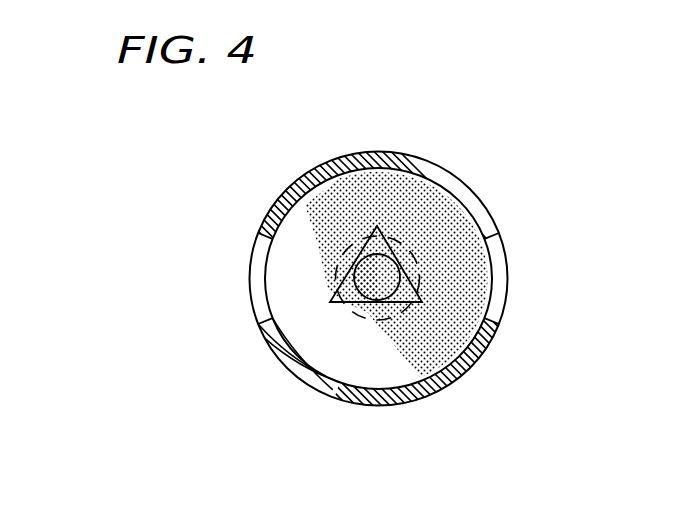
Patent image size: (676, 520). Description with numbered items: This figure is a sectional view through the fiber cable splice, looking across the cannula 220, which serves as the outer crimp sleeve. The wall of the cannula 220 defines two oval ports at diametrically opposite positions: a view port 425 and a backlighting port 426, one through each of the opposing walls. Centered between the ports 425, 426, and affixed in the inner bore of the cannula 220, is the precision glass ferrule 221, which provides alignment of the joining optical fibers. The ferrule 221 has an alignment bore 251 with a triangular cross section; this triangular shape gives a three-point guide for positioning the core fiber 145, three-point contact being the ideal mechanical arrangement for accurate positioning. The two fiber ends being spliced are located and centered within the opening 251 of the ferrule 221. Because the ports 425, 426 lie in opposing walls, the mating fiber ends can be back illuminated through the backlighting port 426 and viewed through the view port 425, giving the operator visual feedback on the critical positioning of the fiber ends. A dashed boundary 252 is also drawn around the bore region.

The cannula 220 is at (303, 180).
The precision glass ferrule 221 is at (290, 317).
The view port 425 is at (258, 252).
The backlighting port 426 is at (503, 270).
The alignment bore 251 is at (348, 291).
The dashed boundary region 252 is at (360, 318).
The core fiber 145 is at (390, 288).